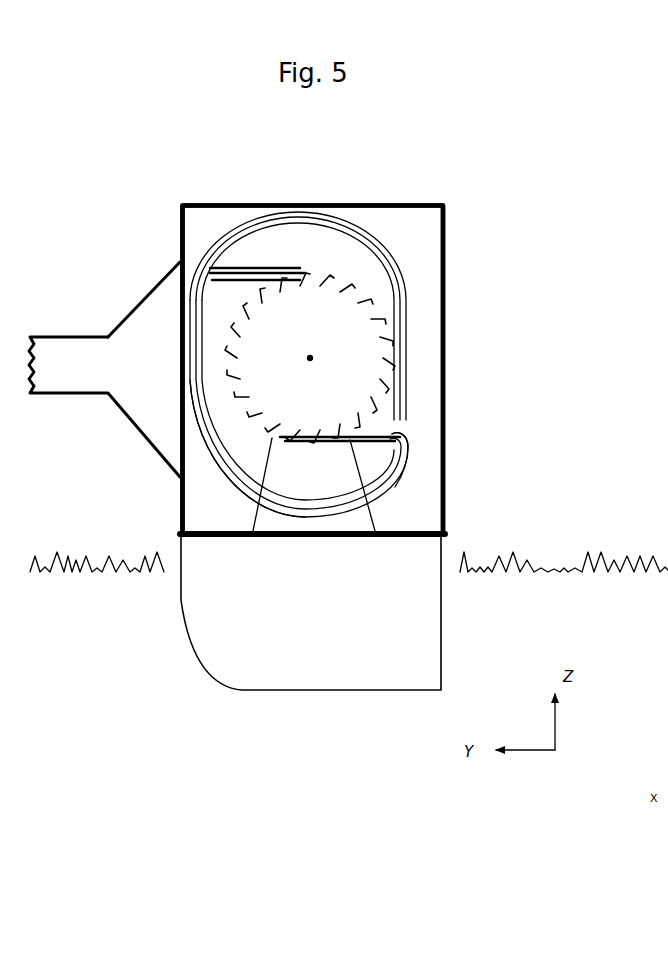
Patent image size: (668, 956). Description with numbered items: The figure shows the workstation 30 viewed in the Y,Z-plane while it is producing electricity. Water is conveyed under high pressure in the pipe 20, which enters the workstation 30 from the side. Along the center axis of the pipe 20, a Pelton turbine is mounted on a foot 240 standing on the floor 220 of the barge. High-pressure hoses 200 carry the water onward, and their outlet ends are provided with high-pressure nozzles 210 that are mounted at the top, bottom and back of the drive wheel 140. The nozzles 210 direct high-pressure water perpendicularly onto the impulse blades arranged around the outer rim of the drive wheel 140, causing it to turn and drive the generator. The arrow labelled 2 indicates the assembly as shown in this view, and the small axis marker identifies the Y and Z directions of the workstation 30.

The fan device 2 is at (432, 339).
The pipe 20 is at (50, 312).
The workstation 30 is at (172, 671).
The drive wheel 140 is at (397, 413).
The high-pressure hoses 200 is at (397, 222).
The high-pressure nozzles 210 is at (430, 280).
The floor 220 is at (424, 557).
The foot 240 is at (240, 513).